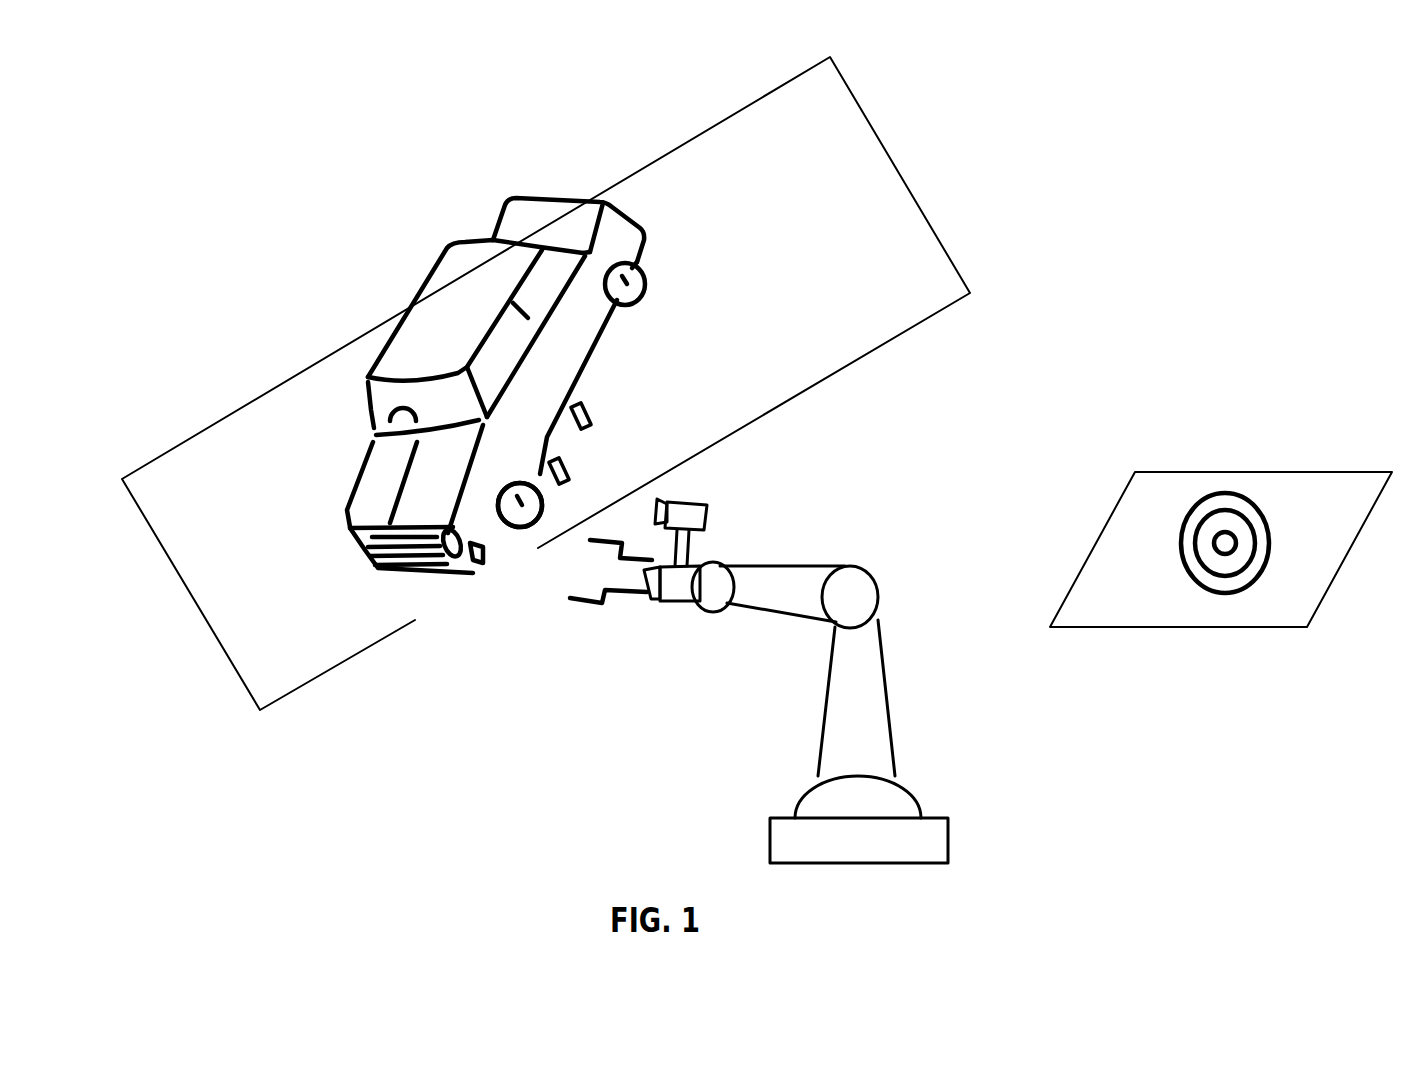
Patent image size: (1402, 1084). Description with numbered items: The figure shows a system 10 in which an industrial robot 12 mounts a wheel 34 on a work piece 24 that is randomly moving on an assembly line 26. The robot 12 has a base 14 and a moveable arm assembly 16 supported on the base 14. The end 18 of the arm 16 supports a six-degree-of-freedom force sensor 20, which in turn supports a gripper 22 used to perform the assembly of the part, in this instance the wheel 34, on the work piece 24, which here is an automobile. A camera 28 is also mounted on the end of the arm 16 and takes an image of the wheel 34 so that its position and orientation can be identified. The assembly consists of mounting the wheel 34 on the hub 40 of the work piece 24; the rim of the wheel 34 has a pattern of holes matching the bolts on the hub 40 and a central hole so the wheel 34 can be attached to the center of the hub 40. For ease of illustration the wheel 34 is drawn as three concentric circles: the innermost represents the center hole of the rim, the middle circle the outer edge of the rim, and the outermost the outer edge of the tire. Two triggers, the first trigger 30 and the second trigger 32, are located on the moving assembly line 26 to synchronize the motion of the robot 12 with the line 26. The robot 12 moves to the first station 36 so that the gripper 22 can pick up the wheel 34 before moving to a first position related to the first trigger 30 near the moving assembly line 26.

The system 10 is at (1134, 193).
The industrial robot 12 is at (1013, 685).
The base 14 is at (952, 835).
The moveable arm assembly 16 is at (907, 532).
The end of the arm 18 is at (667, 600).
The 6-DOF force sensor 20 is at (656, 598).
The gripper 22 is at (589, 612).
The work piece 24 is at (438, 246).
The assembly line 26 is at (921, 199).
The camera 28 is at (699, 495).
The trigger 1 30 is at (592, 404).
The trigger 2 32 is at (549, 476).
The wheel 34 is at (1233, 603).
The station 1 36 is at (1221, 500).
The hub 40 is at (514, 512).